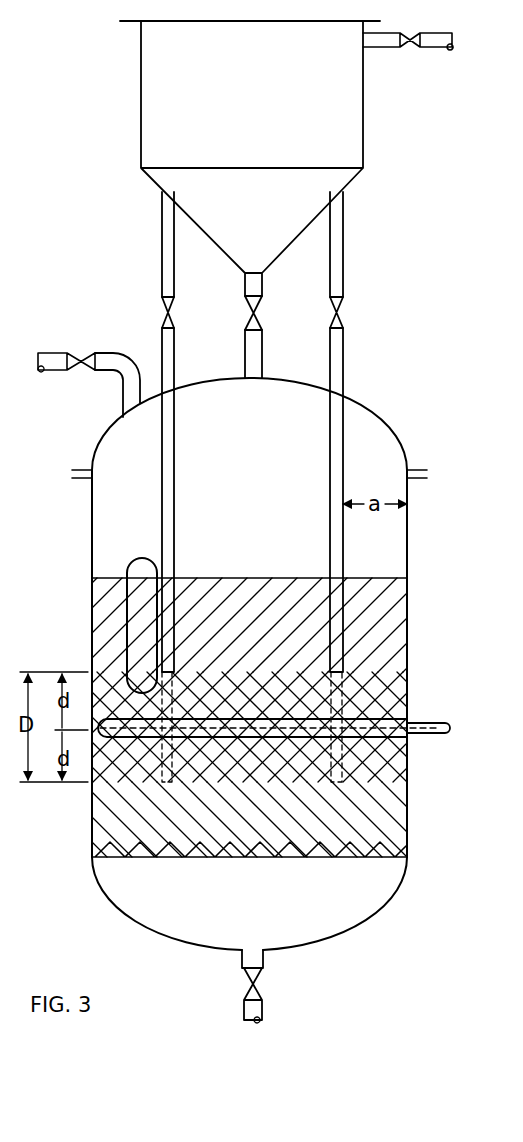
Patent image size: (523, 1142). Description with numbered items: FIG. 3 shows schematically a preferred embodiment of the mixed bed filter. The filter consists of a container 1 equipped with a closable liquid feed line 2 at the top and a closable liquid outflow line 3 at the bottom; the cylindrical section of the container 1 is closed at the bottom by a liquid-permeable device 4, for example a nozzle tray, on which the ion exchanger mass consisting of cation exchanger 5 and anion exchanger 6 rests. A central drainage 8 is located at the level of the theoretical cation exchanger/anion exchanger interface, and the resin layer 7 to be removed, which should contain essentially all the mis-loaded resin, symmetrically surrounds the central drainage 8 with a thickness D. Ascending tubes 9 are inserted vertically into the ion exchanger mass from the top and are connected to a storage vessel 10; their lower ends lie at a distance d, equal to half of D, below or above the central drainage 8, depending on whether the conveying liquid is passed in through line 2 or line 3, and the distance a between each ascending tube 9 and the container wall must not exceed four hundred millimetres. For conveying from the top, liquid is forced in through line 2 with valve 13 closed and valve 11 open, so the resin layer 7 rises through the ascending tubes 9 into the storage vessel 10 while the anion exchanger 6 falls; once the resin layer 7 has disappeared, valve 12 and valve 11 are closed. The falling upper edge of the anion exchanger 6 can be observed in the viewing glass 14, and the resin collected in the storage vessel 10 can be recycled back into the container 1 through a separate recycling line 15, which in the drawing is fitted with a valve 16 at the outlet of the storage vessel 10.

The container 1 is at (407, 522).
The liquid feed line 2 is at (110, 353).
The liquid outflow line 3 is at (265, 957).
The liquid-permeable device 4 is at (390, 850).
The cation exchanger 5 is at (385, 812).
The anion exchanger 6 is at (395, 602).
The resin layer 7 is at (395, 695).
The central drainage 8 is at (430, 740).
The ascending tube 9 is at (330, 433).
The storage vessel 10 is at (356, 95).
The valve 11 is at (365, 314).
The valve 12 is at (67, 353).
The valve 13 is at (262, 993).
The viewing glass 14 is at (130, 566).
The recycling line 15 is at (245, 352).
The hopper outlet valve 16 is at (245, 306).